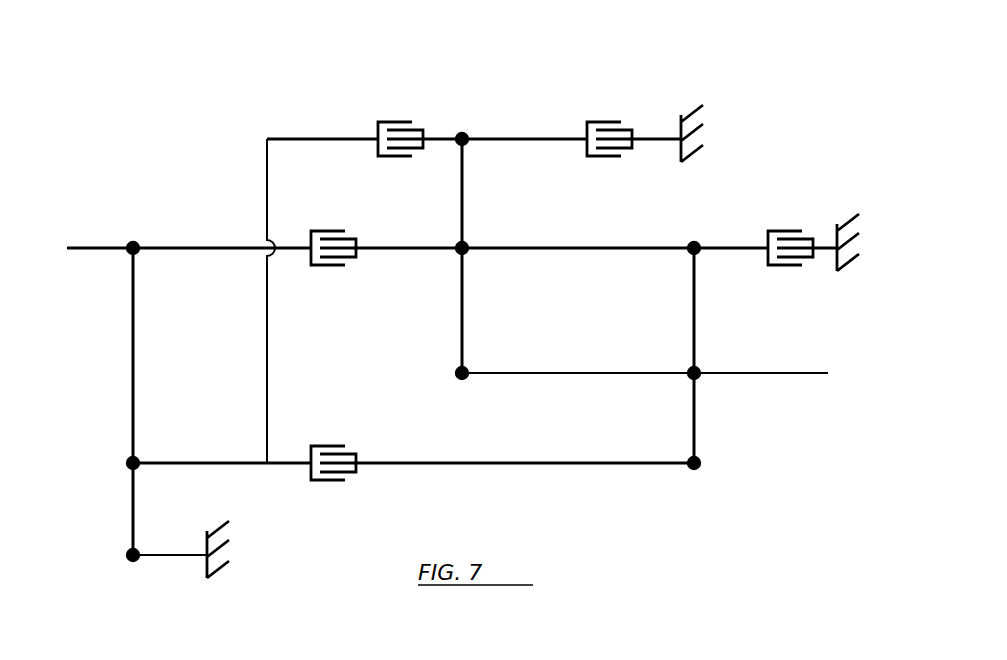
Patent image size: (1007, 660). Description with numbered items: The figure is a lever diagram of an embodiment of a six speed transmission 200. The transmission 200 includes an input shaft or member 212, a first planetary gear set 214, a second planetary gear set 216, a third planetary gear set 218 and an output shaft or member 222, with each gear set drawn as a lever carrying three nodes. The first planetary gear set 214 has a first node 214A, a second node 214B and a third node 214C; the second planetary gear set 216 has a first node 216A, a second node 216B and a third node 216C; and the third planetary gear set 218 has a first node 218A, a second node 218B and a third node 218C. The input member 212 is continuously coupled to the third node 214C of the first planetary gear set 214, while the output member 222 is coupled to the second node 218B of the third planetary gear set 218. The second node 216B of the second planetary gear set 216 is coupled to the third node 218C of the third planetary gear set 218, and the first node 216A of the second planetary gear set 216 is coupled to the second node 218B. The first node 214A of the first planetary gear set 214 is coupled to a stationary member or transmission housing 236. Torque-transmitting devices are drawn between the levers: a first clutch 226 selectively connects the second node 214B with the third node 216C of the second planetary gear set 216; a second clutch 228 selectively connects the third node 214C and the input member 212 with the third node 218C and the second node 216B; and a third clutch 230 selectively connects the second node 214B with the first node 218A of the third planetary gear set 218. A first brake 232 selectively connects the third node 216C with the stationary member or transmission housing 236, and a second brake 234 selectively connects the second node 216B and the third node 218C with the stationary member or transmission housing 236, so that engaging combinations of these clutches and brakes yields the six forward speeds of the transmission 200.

The six speed transmission 200 is at (793, 110).
The input shaft or member 212 is at (85, 252).
The first planetary gear set 214 is at (125, 567).
The first node of the first planetary gear set 214A is at (137, 561).
The second node of the first planetary gear set 214B is at (138, 457).
The third node of the first planetary gear set 214C is at (137, 240).
The second planetary gear set 216 is at (457, 383).
The first node of the second planetary gear set 216A is at (469, 380).
The second node of the second planetary gear set 216B is at (468, 241).
The third node of the second planetary gear set 216C is at (458, 132).
The third planetary gear set 218 is at (688, 476).
The first node of the third planetary gear set 218A is at (700, 470).
The second node of the third planetary gear set 218B is at (688, 366).
The third node of the third planetary gear set 218C is at (694, 240).
The output shaft or member 222 is at (813, 378).
The first clutch 226 is at (392, 121).
The second clutch 228 is at (330, 230).
The third clutch 230 is at (330, 482).
The first brake 232 is at (600, 121).
The second brake 234 is at (786, 230).
The stationary member or transmission housing 236 is at (693, 110).